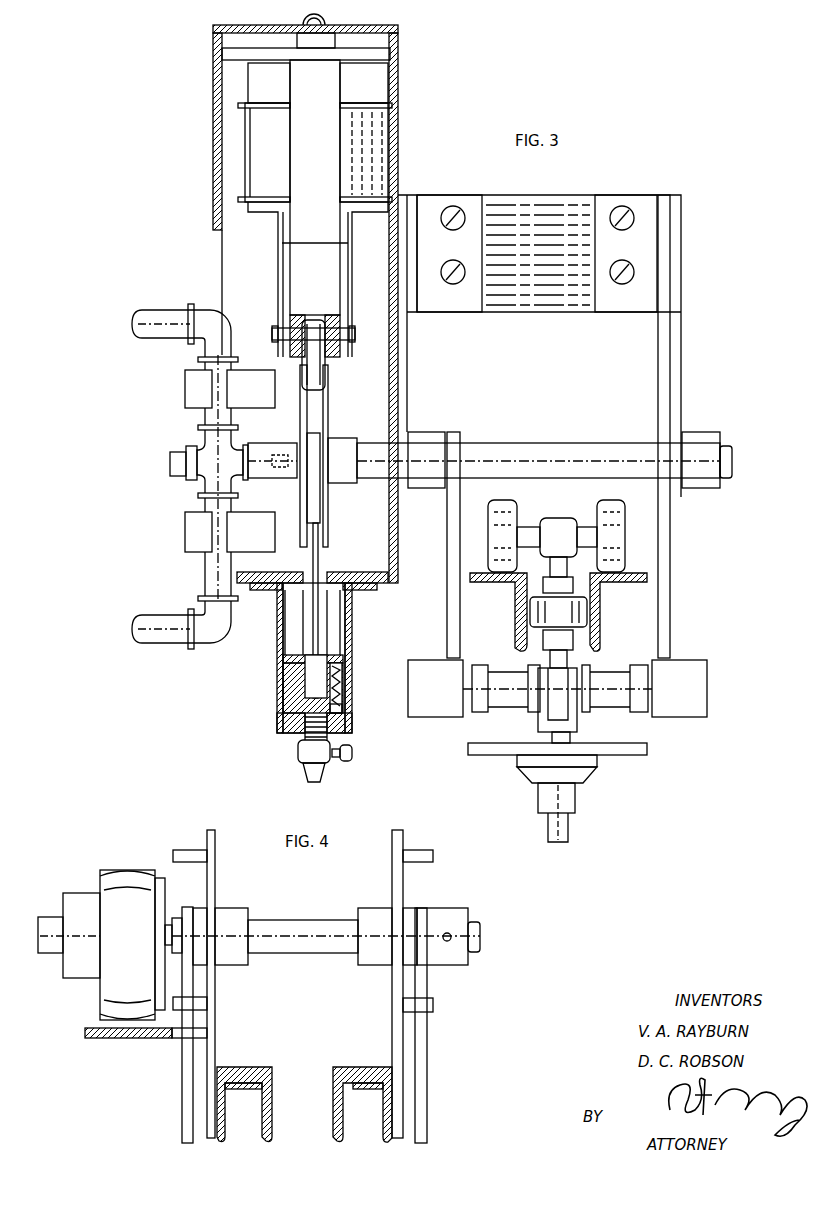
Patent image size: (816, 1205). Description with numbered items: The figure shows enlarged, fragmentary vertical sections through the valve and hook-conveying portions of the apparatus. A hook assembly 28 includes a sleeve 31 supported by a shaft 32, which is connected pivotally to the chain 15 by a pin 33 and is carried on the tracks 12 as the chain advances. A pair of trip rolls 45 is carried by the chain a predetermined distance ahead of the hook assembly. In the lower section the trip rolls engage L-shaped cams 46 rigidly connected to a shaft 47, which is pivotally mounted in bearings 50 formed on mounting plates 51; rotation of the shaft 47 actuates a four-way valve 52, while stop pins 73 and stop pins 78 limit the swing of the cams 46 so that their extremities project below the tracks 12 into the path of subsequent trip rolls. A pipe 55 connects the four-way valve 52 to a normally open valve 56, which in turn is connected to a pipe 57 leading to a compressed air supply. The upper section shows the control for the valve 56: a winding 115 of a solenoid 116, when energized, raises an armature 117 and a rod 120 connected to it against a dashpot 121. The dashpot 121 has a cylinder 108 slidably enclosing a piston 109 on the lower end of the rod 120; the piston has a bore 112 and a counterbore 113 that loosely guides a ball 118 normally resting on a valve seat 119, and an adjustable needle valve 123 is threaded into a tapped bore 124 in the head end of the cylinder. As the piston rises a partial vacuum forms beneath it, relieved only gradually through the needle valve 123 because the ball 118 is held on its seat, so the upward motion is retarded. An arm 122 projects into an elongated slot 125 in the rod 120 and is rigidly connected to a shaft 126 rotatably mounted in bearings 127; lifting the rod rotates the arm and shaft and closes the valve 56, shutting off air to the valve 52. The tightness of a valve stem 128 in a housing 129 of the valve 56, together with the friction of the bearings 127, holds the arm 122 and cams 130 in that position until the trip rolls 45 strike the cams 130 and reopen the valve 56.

In FIG. 3, the tracks 12 is at (515, 600).
In FIG. 4, the tracks 12 is at (262, 1067).
In FIG. 3, the chain 15 is at (545, 645).
In FIG. 3, the hook assembly 28 is at (600, 778).
In FIG. 3, the sleeve 31 is at (540, 795).
In FIG. 3, the shaft 32 is at (548, 736).
In FIG. 3, the pin 33 is at (580, 680).
In FIG. 3, the trip rolls 45 is at (690, 663).
In FIG. 4, the L-shaped cams 46 is at (185, 1090).
In FIG. 4, the shaft 47 is at (300, 920).
In FIG. 4, the bearings 50 is at (228, 908).
In FIG. 4, the mounting plates 51 is at (212, 830).
In FIG. 4, the four-way valve 52 is at (110, 870).
In FIG. 3, the pipe 55 is at (163, 612).
In FIG. 3, the normally open valve 56 is at (205, 475).
In FIG. 3, the pipe 57 is at (155, 308).
In FIG. 4, the stop pins 73 is at (183, 850).
In FIG. 4, the stop pins 78 is at (205, 1001).
In FIG. 3, the cylinder 108 is at (352, 630).
In FIG. 3, the piston 109 is at (285, 690).
In FIG. 3, the bore 112 is at (305, 725).
In FIG. 3, the counterbore 113 is at (345, 663).
In FIG. 3, the winding 115 is at (250, 180).
In FIG. 3, the solenoid 116 is at (262, 93).
In FIG. 3, the armature 117 is at (295, 132).
In FIG. 3, the ball 118 is at (337, 698).
In FIG. 3, the valve seat 119 is at (343, 708).
In FIG. 3, the rod 120 is at (310, 556).
In FIG. 3, the dashpot 121 is at (277, 672).
In FIG. 3, the arm 122 is at (318, 510).
In FIG. 3, the needle valve 123 is at (300, 753).
In FIG. 3, the tapped bore 124 is at (302, 739).
In FIG. 3, the elongated slot 125 is at (320, 385).
In FIG. 3, the shaft 126 is at (580, 445).
In FIG. 3, the bearings 127 is at (430, 440).
In FIG. 3, the valve stem 128 is at (275, 450).
In FIG. 3, the housing 129 is at (225, 427).
In FIG. 3, the cams 130 is at (670, 535).